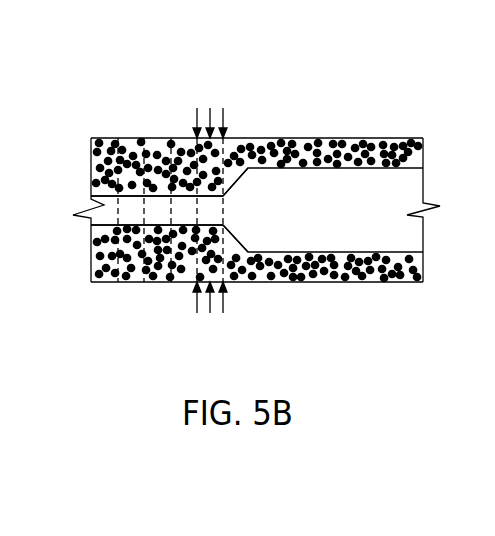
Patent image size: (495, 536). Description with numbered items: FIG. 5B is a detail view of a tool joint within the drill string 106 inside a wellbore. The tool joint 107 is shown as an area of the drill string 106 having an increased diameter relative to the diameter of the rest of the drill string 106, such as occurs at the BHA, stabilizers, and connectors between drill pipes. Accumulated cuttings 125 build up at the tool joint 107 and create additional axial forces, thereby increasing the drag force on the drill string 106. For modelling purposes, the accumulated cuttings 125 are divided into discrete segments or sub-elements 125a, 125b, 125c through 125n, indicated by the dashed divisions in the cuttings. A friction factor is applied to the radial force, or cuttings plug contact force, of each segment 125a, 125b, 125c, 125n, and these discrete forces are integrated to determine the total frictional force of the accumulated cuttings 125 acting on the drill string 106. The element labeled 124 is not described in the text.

The first layer 124 is at (348, 138).
The accumulated cuttings 125 is at (333, 282).
The segment of accumulated cuttings 125a is at (215, 133).
The segment of accumulated cuttings 125b is at (180, 137).
The segment of accumulated cuttings 125c is at (167, 137).
The segment of accumulated cuttings 125n is at (127, 137).
The drill string 106 is at (130, 217).
The tool joint 107 is at (248, 167).